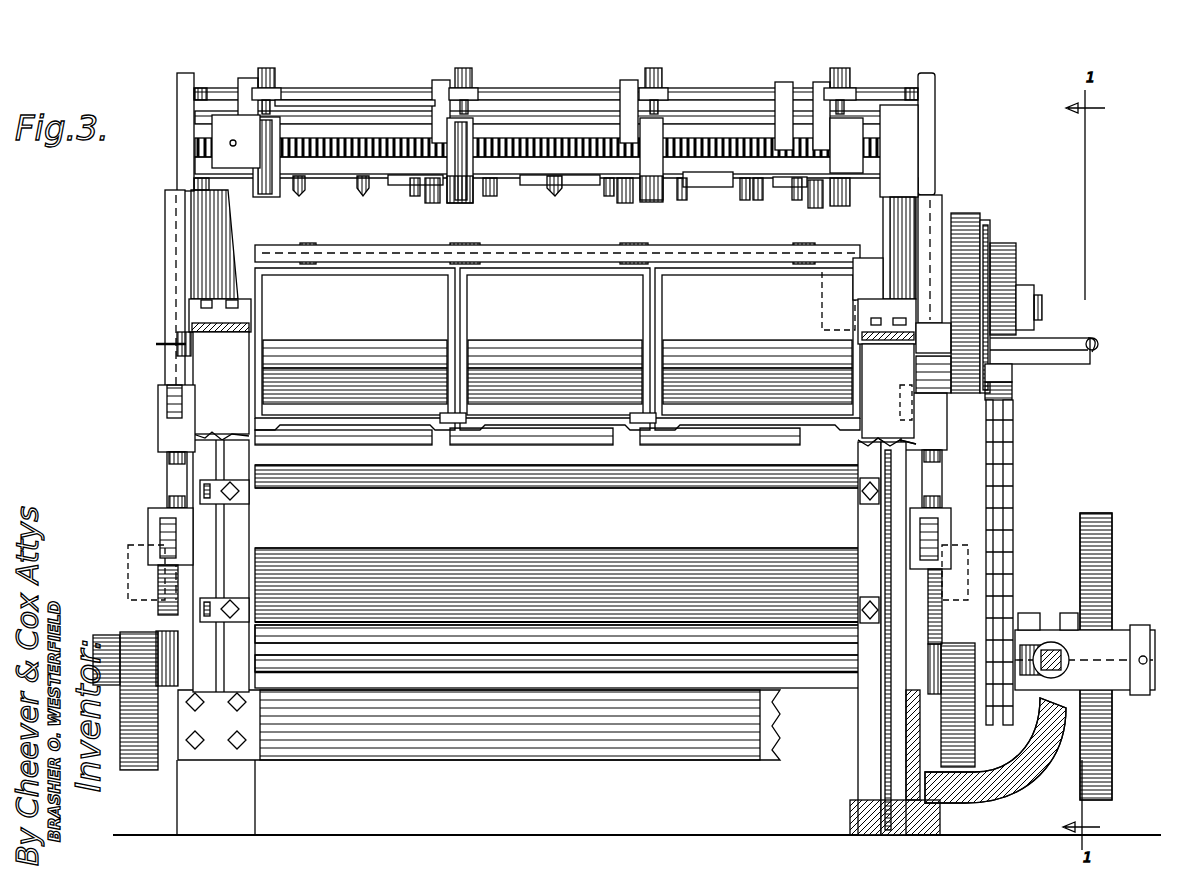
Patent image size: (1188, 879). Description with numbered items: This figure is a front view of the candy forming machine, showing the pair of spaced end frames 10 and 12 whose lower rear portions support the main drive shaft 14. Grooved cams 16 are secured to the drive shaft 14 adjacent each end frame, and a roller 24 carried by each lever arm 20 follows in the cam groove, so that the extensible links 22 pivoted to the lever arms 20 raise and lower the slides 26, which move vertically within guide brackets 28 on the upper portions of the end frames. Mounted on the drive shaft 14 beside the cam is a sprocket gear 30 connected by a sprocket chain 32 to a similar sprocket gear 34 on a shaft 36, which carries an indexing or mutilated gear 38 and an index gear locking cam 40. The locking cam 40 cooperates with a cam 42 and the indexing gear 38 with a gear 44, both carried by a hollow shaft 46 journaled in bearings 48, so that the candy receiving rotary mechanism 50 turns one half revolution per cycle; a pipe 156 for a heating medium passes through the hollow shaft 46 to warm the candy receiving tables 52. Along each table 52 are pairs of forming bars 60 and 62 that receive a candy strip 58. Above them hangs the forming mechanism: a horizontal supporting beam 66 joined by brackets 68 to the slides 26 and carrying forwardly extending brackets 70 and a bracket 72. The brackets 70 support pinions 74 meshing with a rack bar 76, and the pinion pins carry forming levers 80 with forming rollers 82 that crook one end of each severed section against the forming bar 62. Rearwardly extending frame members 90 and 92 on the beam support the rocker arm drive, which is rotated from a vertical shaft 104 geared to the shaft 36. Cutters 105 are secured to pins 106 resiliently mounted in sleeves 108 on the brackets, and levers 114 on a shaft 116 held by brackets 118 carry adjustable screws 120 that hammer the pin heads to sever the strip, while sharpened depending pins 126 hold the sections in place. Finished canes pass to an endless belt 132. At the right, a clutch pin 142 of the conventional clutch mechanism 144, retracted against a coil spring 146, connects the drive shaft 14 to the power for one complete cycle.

The end frame 10 is at (850, 786).
The end frame 12 is at (258, 777).
The main drive shaft 14 is at (726, 660).
The grooved cam 16 is at (132, 548).
The lever arm 20 is at (156, 600).
The extensible link 22 is at (167, 480).
The roller 24 is at (128, 565).
The slide 26 is at (177, 150).
The guide bracket 28 is at (960, 206).
The sprocket gear 30 is at (992, 722).
The sprocket chain 32 is at (1000, 470).
The sprocket gear 34 is at (1002, 246).
The shaft 36 is at (1042, 303).
The indexing gear 38 is at (988, 223).
The index gear locking cam 40 is at (990, 240).
The cam 42 is at (1000, 378).
The gear 44 is at (1005, 400).
The hollow shaft 46 is at (340, 290).
The bearing 48 is at (870, 310).
The candy receiving rotary mechanism 50 is at (548, 362).
The candy receiving table 52 is at (508, 415).
The candy strip 58 is at (440, 266).
The forming bar 60 is at (298, 258).
The forming bar 62 is at (335, 256).
The supporting beam 66 is at (905, 128).
The bracket 68 is at (195, 85).
The bracket 70 is at (490, 196).
The bracket 72 is at (296, 196).
The pinion 74 is at (393, 150).
The rack bar 76 is at (328, 150).
The forming lever 80 is at (428, 190).
The forming roller 82 is at (433, 204).
The frame member 90 is at (735, 112).
The frame member 92 is at (690, 190).
The vertical shaft 104 is at (870, 262).
The cutter 105 is at (268, 200).
The pin 106 is at (307, 113).
The sleeve 108 is at (455, 125).
The lever 114 is at (280, 92).
The shaft 116 is at (262, 85).
The bracket 118 is at (440, 80).
The adjustable screw 120 is at (285, 92).
The depending pin 126 is at (363, 190).
The endless belt 132 is at (858, 442).
The clutch pin 142 is at (1060, 650).
The clutch mechanism 144 is at (1056, 632).
The coil spring 146 is at (1096, 515).
The pipe 156 is at (178, 340).